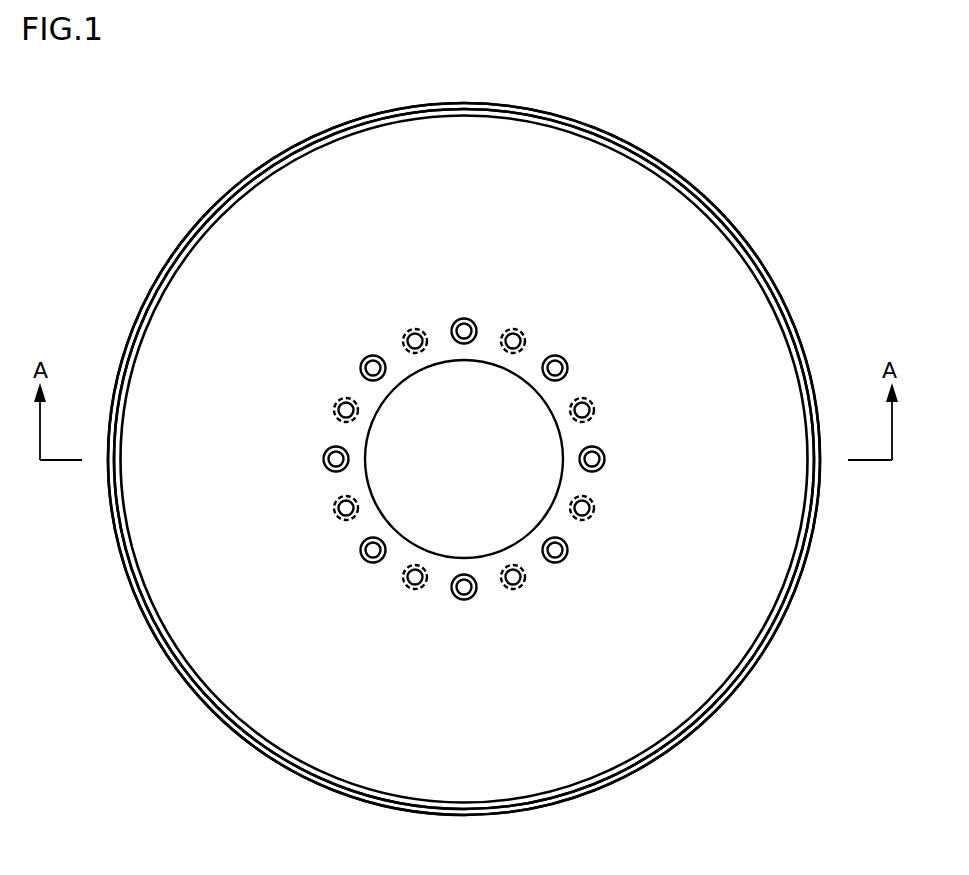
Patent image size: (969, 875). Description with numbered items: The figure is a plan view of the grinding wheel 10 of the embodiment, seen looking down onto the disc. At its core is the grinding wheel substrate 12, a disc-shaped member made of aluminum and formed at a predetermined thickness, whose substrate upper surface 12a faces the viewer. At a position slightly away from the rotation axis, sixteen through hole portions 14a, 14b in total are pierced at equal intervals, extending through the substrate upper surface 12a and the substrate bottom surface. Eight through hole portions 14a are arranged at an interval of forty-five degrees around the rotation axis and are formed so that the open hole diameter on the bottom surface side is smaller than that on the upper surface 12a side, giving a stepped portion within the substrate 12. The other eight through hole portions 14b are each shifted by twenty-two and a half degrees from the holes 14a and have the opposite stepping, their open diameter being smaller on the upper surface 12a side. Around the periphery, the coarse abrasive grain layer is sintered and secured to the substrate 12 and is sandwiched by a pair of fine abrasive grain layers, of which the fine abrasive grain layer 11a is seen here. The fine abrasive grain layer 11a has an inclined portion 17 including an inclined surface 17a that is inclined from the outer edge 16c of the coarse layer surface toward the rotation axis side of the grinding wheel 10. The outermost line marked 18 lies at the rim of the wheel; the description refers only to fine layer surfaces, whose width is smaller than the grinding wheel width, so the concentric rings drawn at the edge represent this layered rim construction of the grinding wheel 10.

The grinding wheel 10 is at (120, 208).
The substrate upper surface 12a is at (653, 192).
The grinding wheel substrate 12 is at (464, 459).
The fine abrasive grain layer 11a is at (728, 226).
The inclined surface 17a is at (753, 258).
The inclined portion 17 is at (489, 459).
The outer edge 16c is at (784, 301).
The ring member 18 is at (790, 342).
The through hole portion 14a is at (464, 317).
The through hole portion 14b is at (514, 327).